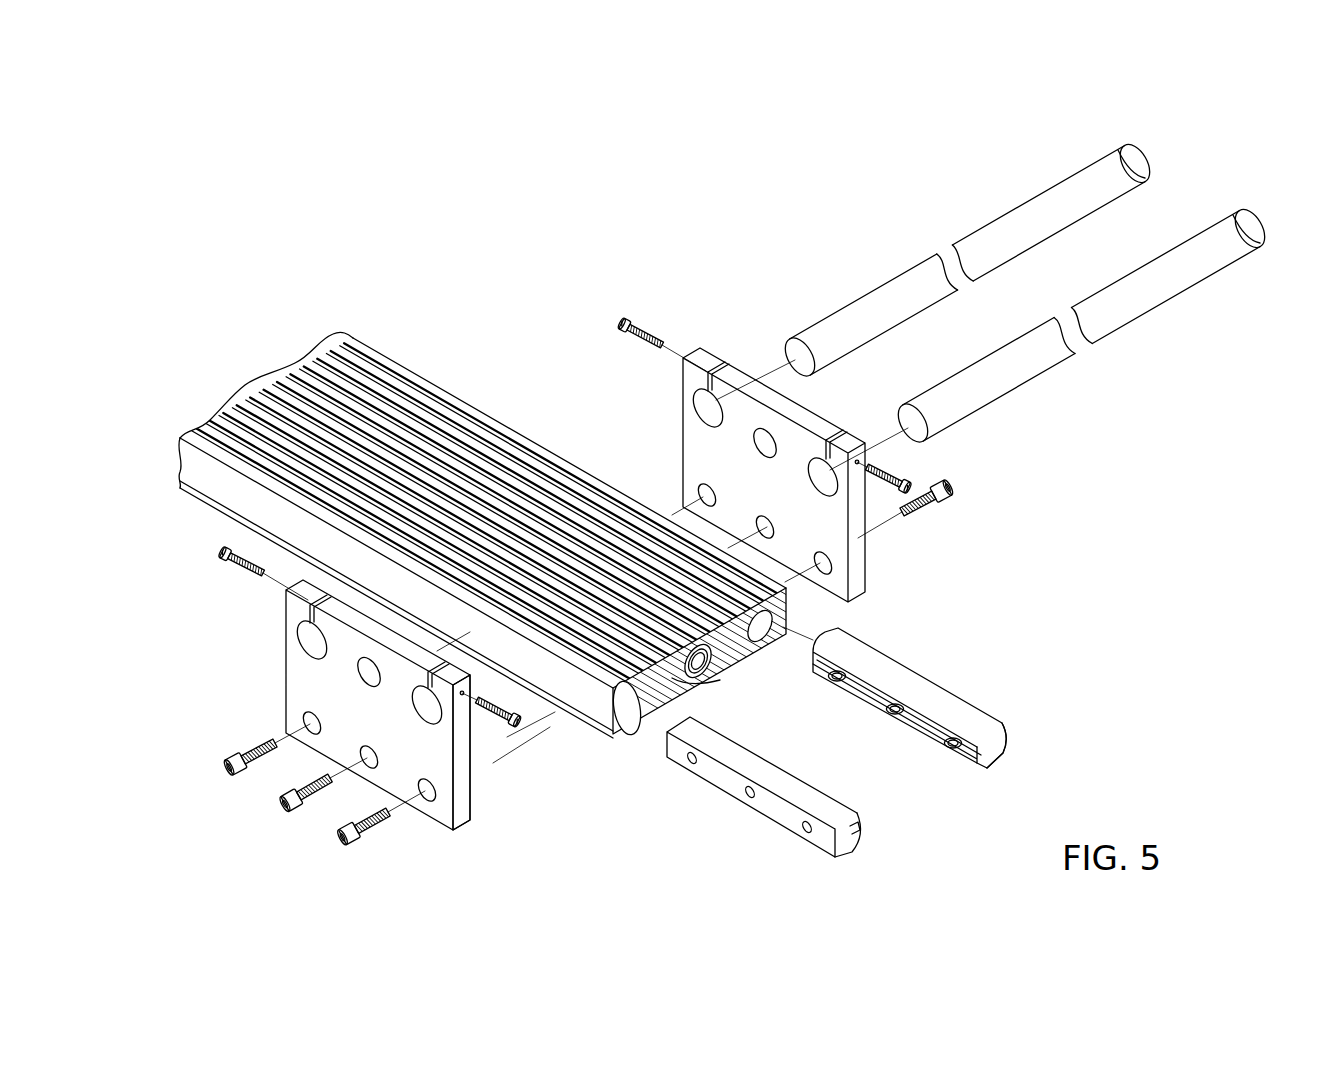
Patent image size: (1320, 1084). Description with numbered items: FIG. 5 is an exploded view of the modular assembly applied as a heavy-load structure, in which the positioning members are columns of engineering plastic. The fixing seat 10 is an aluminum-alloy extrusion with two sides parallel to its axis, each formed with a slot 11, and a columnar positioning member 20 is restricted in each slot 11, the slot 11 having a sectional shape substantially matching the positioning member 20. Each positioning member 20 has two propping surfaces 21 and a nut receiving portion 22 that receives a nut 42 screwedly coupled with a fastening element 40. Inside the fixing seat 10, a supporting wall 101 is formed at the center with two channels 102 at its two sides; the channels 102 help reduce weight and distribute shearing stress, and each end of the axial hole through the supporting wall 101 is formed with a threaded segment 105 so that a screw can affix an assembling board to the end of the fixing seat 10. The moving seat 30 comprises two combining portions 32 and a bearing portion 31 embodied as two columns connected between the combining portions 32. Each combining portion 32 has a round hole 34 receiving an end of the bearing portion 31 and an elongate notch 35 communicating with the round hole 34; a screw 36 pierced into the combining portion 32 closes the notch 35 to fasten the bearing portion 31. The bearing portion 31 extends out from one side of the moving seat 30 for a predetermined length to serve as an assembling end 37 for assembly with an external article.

The fixing seat 10 is at (420, 358).
The slot 11 is at (778, 608).
The positioning member 20 is at (802, 812).
The propping surface 21 is at (803, 790).
The nut receiving portion 22 is at (845, 848).
The moving seat 30 is at (478, 796).
The bearing portion 31 is at (840, 314).
The combining portion 32 is at (296, 690).
The round hole 34 is at (305, 645).
The elongate notch 35 is at (305, 610).
The screw 36 is at (218, 553).
The assembling end 37 is at (1102, 168).
The fastening element 40 is at (226, 782).
The nut 42 is at (950, 752).
The supporting wall 101 is at (690, 682).
The channel 102 is at (742, 656).
The threaded segment 105 is at (712, 674).